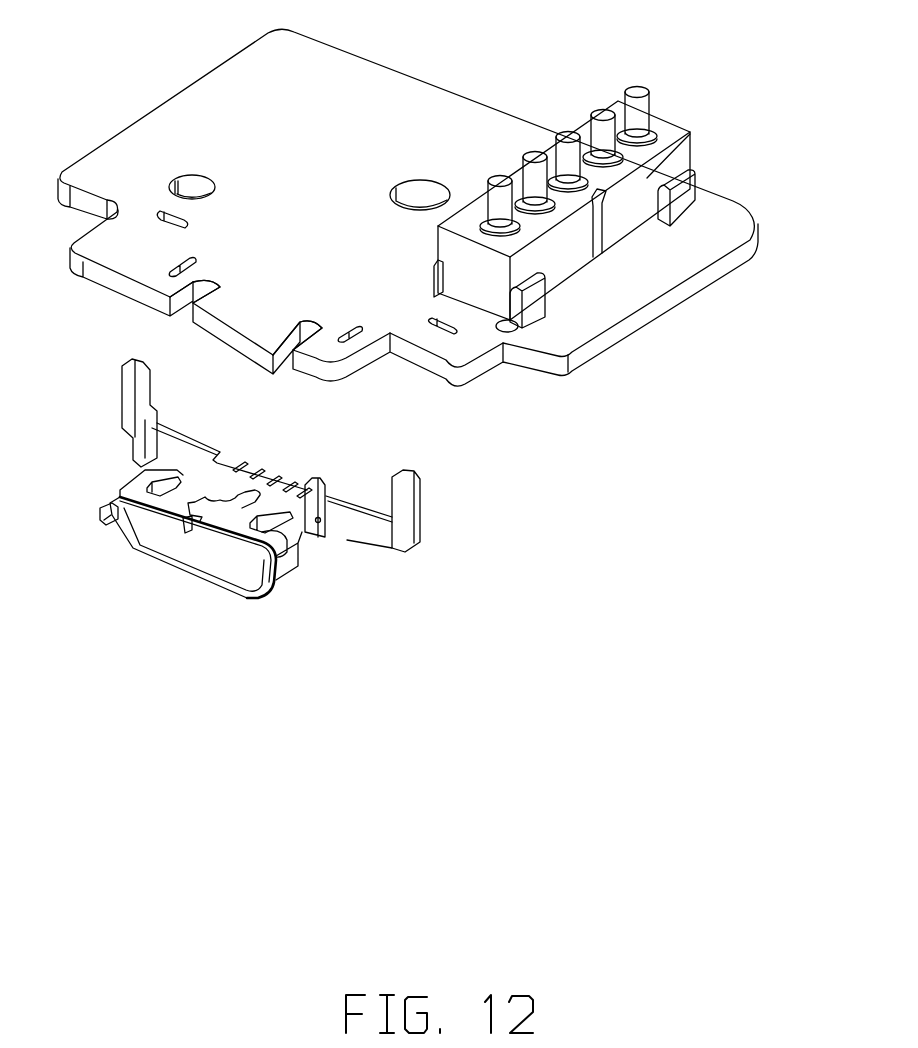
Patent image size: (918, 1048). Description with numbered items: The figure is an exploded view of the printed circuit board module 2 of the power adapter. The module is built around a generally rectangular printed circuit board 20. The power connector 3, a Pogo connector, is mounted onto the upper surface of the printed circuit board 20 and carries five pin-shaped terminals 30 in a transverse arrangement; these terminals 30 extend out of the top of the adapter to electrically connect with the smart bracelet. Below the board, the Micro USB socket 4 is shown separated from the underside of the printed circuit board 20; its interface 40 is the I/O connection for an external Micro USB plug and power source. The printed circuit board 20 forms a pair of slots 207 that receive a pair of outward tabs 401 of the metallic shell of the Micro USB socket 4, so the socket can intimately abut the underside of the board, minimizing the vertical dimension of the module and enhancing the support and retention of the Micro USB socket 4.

The printed circuit board module 2 is at (213, 103).
The printed circuit board 20 is at (628, 272).
The slots 207 is at (287, 342).
The power connector 3 is at (647, 180).
The terminals 30 is at (638, 113).
The Micro USB socket 4 is at (293, 560).
The interface 40 is at (233, 563).
The outward tabs 401 is at (245, 533).